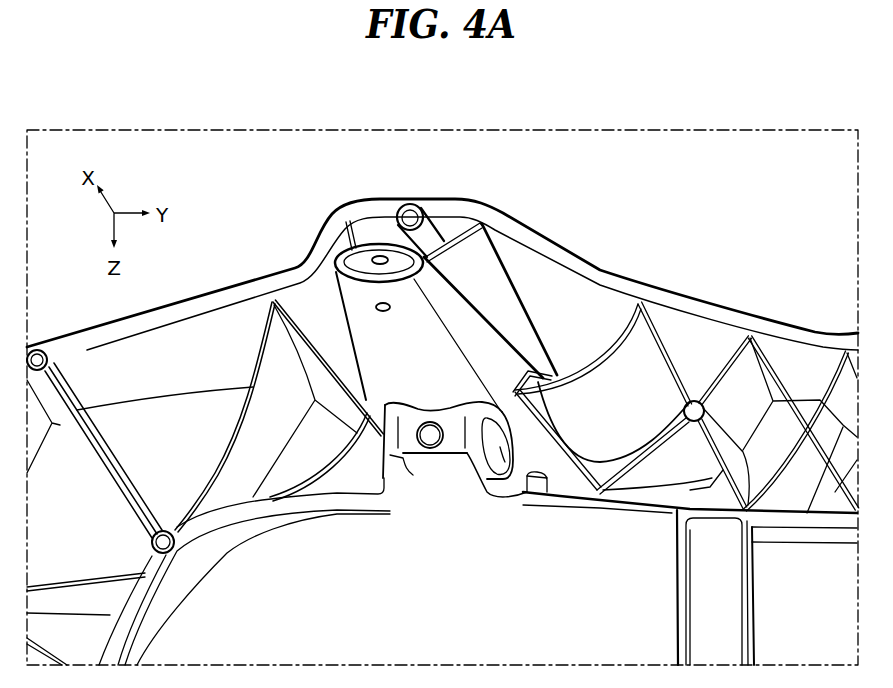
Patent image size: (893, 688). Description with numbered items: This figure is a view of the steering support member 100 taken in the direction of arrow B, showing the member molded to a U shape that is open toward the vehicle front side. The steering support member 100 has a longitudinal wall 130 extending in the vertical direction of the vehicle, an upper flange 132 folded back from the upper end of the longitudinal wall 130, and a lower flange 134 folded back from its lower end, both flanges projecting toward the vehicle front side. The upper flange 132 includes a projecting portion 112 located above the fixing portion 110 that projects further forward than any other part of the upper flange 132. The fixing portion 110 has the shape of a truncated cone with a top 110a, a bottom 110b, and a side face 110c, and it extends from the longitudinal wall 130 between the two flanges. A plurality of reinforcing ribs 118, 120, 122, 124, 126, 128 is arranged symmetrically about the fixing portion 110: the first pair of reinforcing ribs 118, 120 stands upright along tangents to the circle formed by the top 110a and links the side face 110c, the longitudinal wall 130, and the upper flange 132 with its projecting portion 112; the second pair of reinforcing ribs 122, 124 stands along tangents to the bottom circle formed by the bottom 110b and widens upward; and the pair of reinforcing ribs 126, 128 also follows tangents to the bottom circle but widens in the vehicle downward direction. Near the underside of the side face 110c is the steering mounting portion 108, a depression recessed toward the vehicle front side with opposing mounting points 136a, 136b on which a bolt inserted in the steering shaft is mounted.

The steering support member 100 is at (610, 126).
The steering mounting portion 108 is at (443, 460).
The fixing portion 110 is at (415, 330).
The top 110a is at (371, 251).
The bottom 110b is at (531, 472).
The side face 110c is at (440, 372).
The projecting portion 112 is at (518, 230).
The reinforcing rib 118 is at (457, 250).
The reinforcing rib 120 is at (364, 255).
The reinforcing rib 122 is at (620, 363).
The reinforcing rib 124 is at (307, 360).
The reinforcing rib 126 is at (556, 465).
The reinforcing rib 128 is at (332, 485).
The longitudinal wall 130 is at (163, 482).
The upper flange 132 is at (543, 280).
The lower flange 134 is at (645, 508).
The mounting point 136a is at (507, 473).
The mounting point 136b is at (407, 458).